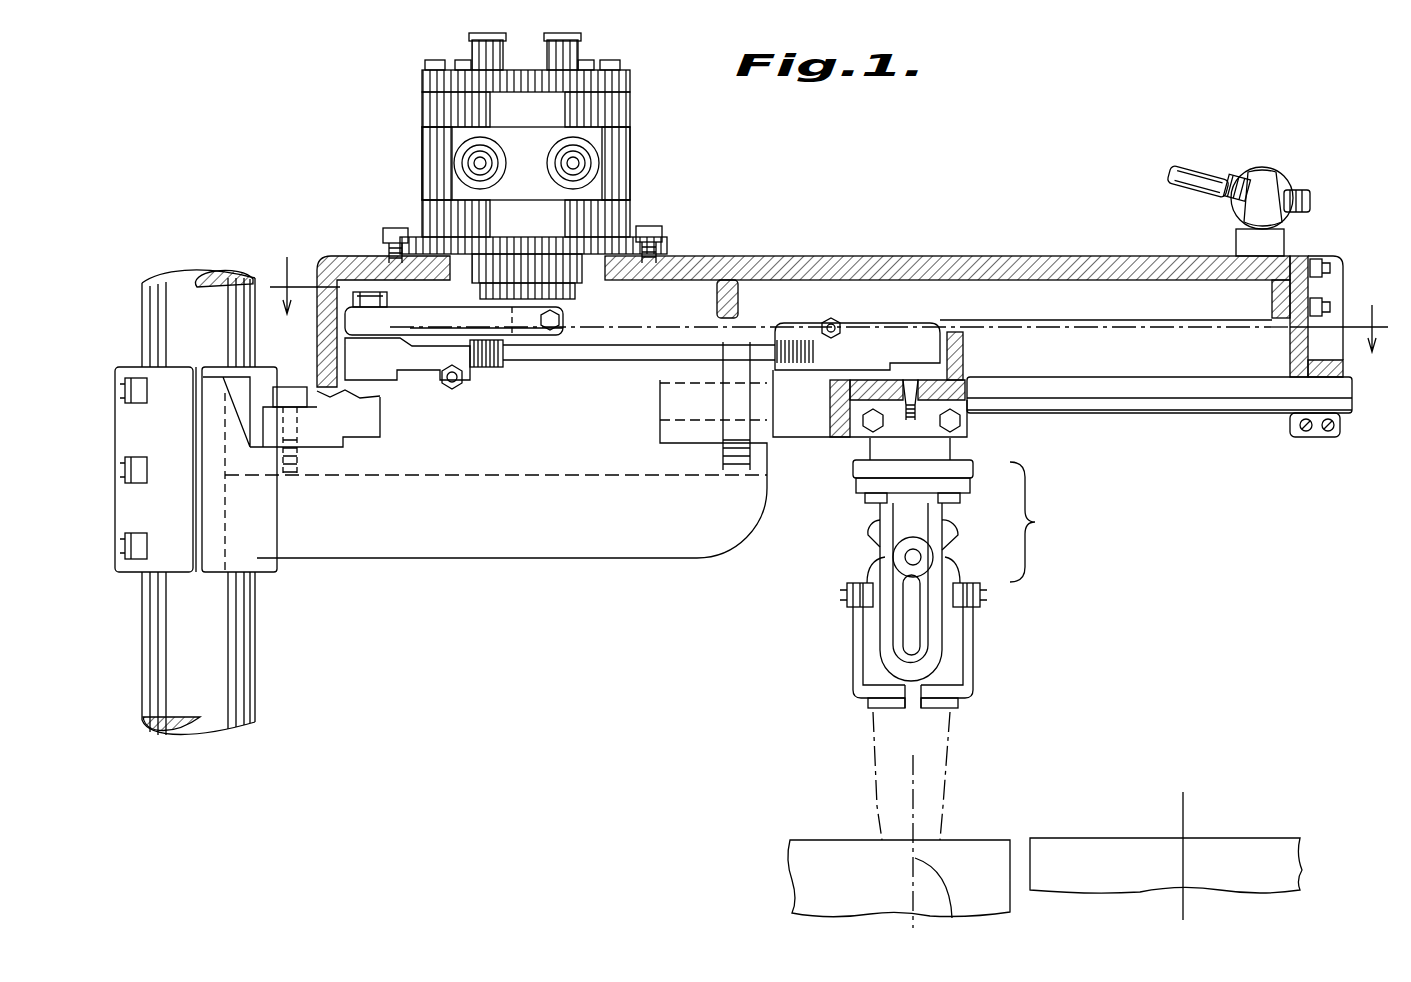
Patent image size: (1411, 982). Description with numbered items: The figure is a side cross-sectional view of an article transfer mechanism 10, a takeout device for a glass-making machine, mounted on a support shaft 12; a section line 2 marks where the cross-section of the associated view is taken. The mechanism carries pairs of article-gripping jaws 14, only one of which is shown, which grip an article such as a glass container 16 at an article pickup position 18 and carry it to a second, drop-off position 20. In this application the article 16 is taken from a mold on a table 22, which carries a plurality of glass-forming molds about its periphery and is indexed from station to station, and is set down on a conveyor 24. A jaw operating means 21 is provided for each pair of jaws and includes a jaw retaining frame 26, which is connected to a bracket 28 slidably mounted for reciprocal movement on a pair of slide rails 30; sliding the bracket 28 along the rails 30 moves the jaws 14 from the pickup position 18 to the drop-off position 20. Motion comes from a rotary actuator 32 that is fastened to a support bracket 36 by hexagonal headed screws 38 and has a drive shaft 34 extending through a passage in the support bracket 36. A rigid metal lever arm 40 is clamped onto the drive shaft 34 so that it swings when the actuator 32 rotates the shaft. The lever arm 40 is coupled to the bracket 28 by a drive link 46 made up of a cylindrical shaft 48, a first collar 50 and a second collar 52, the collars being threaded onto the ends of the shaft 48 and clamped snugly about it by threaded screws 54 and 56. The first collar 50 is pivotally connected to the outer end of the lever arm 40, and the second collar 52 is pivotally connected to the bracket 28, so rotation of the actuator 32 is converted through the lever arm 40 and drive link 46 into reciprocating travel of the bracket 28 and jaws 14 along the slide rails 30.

The section line 2- 2 is at (829, 287).
The article transfer mechanism 10 is at (920, 228).
The support shaft 12 is at (256, 639).
The article-gripping jaws 14 is at (843, 634).
The glass container 16 is at (876, 747).
The article pickup position 18 is at (952, 918).
The drop-off position 20 is at (1185, 813).
The jaw operating means 21 is at (971, 571).
The table 22 is at (805, 878).
The conveyor 24 is at (1135, 877).
The jaw retaining frame 26 is at (982, 462).
The bracket 28 is at (945, 388).
The slide rails 30 is at (1170, 400).
The rotary actuator 32 is at (634, 145).
The drive shaft 34 is at (540, 335).
The support bracket 36 is at (768, 257).
The hexagonal headed screws 38 is at (648, 226).
The lever arm 40 is at (410, 296).
The drive link 46 is at (630, 418).
The cylindrical shaft 48 is at (625, 358).
The first collar 50 is at (418, 374).
The second collar 52 is at (858, 340).
The threaded screw 54 is at (456, 388).
The threaded screw 56 is at (822, 320).